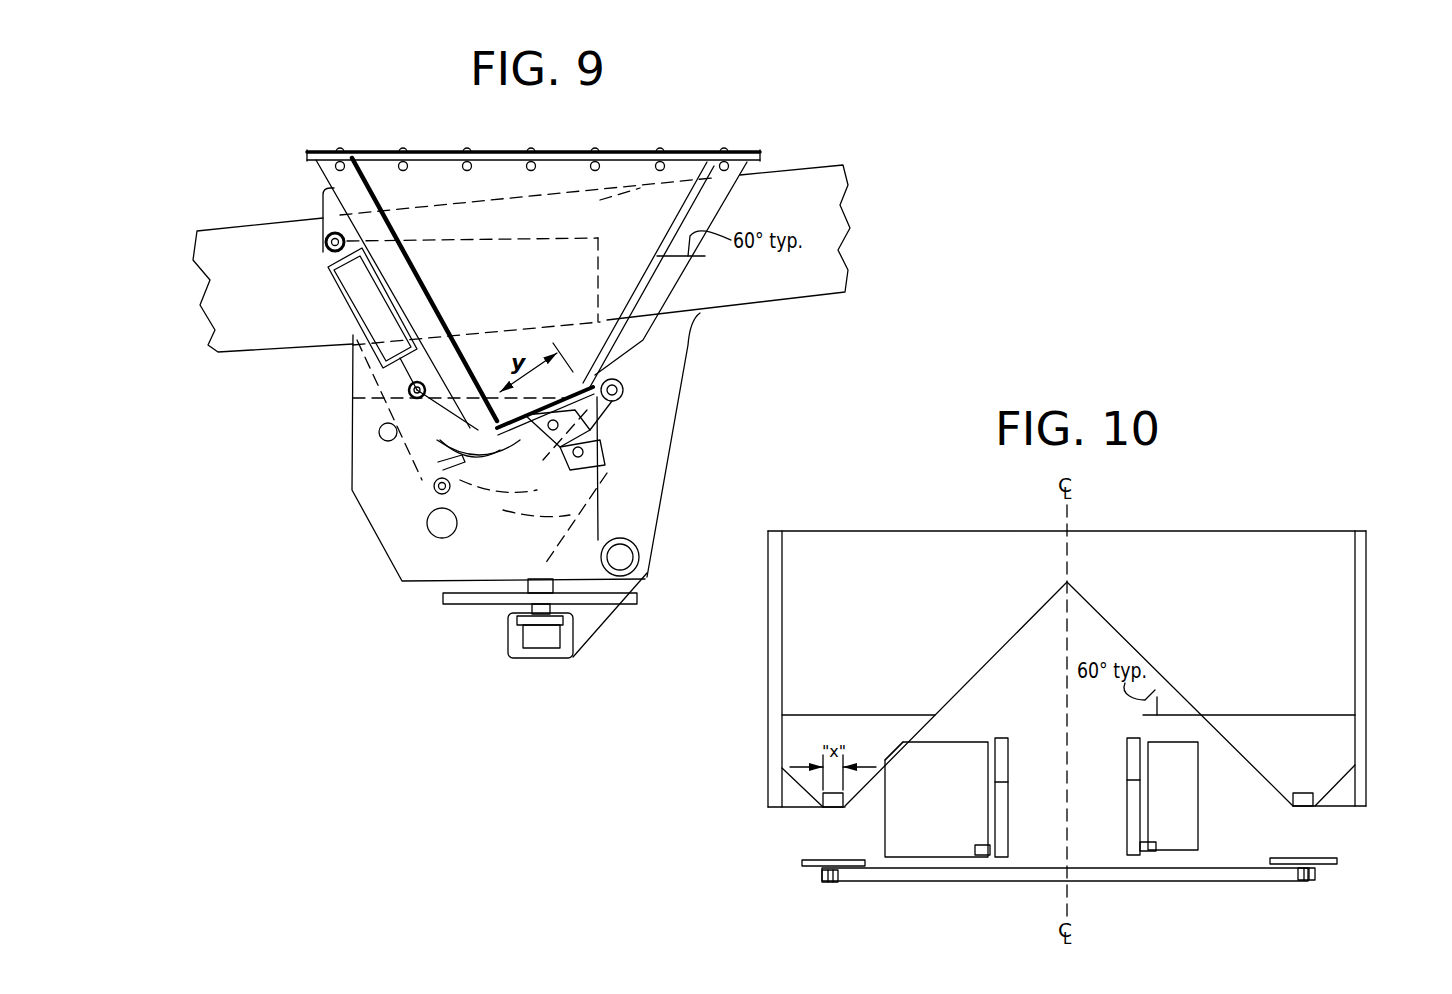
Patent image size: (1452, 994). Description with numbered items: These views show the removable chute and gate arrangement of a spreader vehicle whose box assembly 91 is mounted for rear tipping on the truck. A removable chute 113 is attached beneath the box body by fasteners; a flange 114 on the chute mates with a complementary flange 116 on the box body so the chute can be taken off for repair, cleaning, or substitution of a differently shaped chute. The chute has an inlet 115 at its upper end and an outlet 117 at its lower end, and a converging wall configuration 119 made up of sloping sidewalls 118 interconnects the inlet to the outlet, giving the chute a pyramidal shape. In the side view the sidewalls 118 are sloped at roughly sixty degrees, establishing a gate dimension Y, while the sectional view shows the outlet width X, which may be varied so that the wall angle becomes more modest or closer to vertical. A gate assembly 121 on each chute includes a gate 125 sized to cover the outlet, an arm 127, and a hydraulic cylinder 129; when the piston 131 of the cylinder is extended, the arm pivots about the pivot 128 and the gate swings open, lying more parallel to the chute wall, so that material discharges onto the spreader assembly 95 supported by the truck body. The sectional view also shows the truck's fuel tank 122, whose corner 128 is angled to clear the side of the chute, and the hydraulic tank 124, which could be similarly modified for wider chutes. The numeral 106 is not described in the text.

In FIG. 10, the box assembly 91 is at (1200, 518).
In FIG. 9, the spreader assembly 95 is at (458, 615).
In FIG. 9, the hopper assembly 106 is at (633, 150).
In FIG. 9, the removable chute 113 is at (298, 196).
In FIG. 10, the removable chute 113 is at (1360, 676).
In FIG. 9, the flange 114 is at (450, 166).
In FIG. 9, the inlet 115 is at (633, 167).
In FIG. 9, the complementary flange 116 is at (486, 152).
In FIG. 9, the outlet 117 is at (569, 345).
In FIG. 10, the outlet 117 is at (830, 810).
In FIG. 9, the sidewall 118 is at (660, 247).
In FIG. 10, the sidewall 118 is at (910, 735).
In FIG. 9, the converging wall configuration 119 is at (637, 333).
In FIG. 9, the gate assembly 121 is at (363, 383).
In FIG. 10, the fuel tank 122 is at (975, 750).
In FIG. 10, the hydraulic tank 124 is at (1187, 810).
In FIG. 9, the gate 125 is at (436, 458).
In FIG. 9, the arm 127 is at (493, 450).
In FIG. 9, the pivot 128 is at (625, 388).
In FIG. 10, the pivot 128 is at (900, 762).
In FIG. 9, the hydraulic cylinder 129 is at (330, 363).
In FIG. 9, the piston 131 is at (347, 289).
In FIG. 10, the piston 131 is at (768, 745).